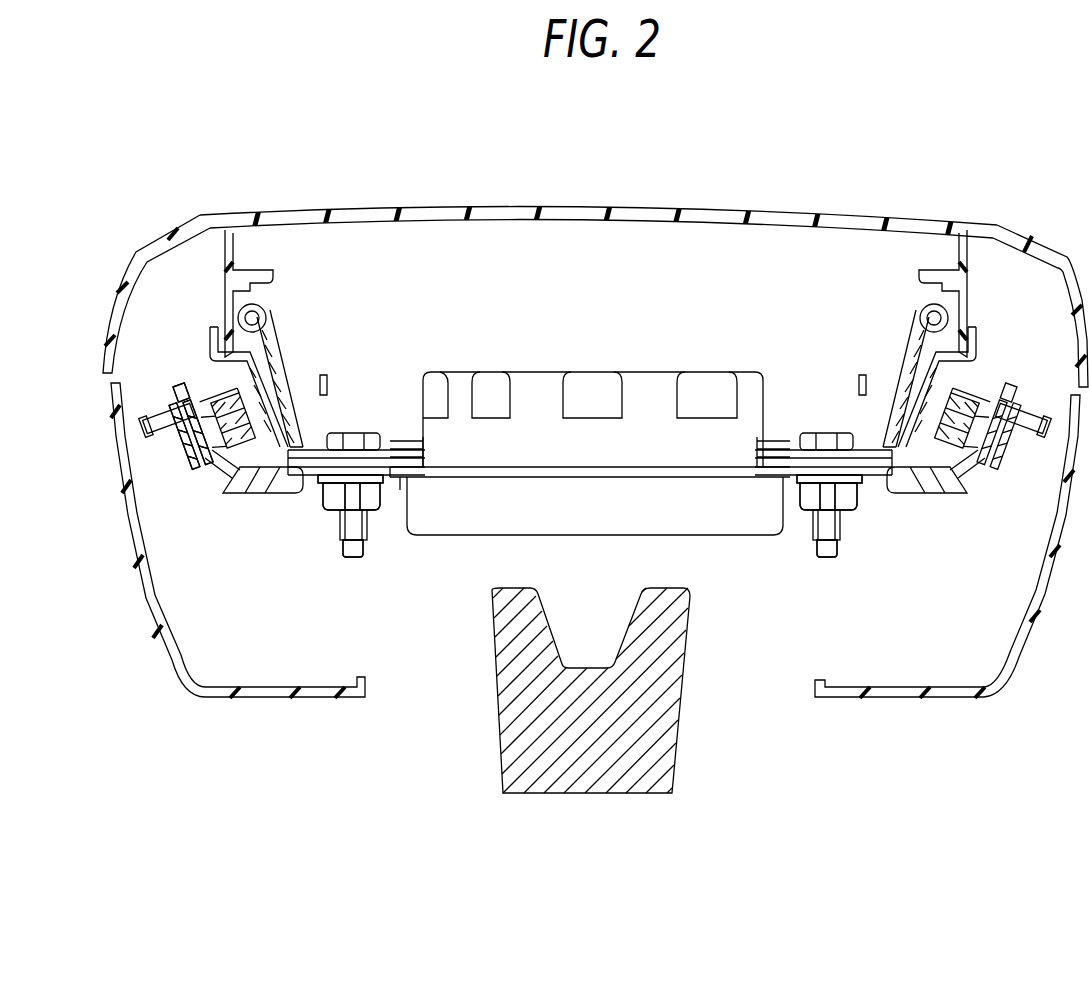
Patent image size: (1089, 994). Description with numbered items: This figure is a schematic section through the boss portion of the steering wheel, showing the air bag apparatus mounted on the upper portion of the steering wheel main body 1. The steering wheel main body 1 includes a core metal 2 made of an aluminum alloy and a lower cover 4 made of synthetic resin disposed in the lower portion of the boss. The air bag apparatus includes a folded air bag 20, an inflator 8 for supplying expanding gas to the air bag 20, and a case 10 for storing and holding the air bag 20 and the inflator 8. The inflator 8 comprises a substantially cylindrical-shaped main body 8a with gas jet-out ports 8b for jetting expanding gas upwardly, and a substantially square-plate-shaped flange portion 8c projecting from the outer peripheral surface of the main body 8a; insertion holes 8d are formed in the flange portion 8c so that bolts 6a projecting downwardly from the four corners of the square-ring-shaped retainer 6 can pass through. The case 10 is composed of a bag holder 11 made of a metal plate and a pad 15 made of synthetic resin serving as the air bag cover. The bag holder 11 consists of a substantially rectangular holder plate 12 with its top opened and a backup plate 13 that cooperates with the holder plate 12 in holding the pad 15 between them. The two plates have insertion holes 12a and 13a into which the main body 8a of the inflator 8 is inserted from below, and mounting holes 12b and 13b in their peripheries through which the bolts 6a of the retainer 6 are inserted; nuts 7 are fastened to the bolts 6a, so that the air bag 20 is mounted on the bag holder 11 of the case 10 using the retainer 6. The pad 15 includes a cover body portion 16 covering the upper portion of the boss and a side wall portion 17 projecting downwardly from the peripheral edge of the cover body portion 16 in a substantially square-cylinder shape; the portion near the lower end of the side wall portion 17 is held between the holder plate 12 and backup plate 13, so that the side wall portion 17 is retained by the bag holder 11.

The steering wheel main body 1 is at (838, 815).
The core metal 2 is at (673, 713).
The lower cover 4 is at (838, 698).
The retainer 6 is at (337, 432).
The bolt 6a is at (352, 560).
The nut 7 is at (330, 500).
The inflator 8 is at (578, 548).
The main body 8a is at (640, 385).
The gas jet-out port 8b is at (492, 385).
The flange portion 8c is at (693, 480).
The insertion hole 8d is at (400, 490).
The case 10 is at (140, 137).
The bag holder 11 is at (200, 318).
The holder plate 12 is at (256, 487).
The insertion hole 12a is at (400, 445).
The mounting hole 12b is at (356, 432).
The backup plate 13 is at (230, 487).
The insertion hole 13a is at (415, 485).
The mounting hole 13b is at (335, 490).
The pad 15 is at (170, 218).
The cover body portion 16 is at (683, 207).
The side wall portion 17 is at (235, 256).
The air bag 20 is at (305, 388).